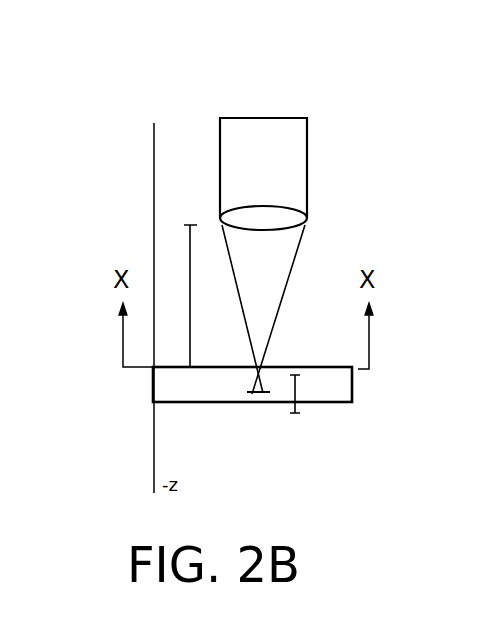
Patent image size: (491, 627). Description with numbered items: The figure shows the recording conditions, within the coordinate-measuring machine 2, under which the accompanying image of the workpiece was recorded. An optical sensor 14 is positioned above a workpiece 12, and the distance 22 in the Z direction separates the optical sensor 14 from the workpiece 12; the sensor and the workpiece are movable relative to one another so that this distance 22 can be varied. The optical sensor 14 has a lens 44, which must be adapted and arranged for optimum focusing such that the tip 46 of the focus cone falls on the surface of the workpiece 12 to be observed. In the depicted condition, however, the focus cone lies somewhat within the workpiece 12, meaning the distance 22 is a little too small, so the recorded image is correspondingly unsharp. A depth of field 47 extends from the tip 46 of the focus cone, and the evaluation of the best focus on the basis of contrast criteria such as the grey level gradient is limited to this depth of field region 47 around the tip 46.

The microscope system 2 is at (12, 165).
The workpiece 12 is at (161, 383).
The optical sensor 14 is at (265, 127).
The distance 22 is at (190, 256).
The lens 44 is at (280, 212).
The tip of focus cone 46 is at (264, 393).
The depth of field 47 is at (297, 388).